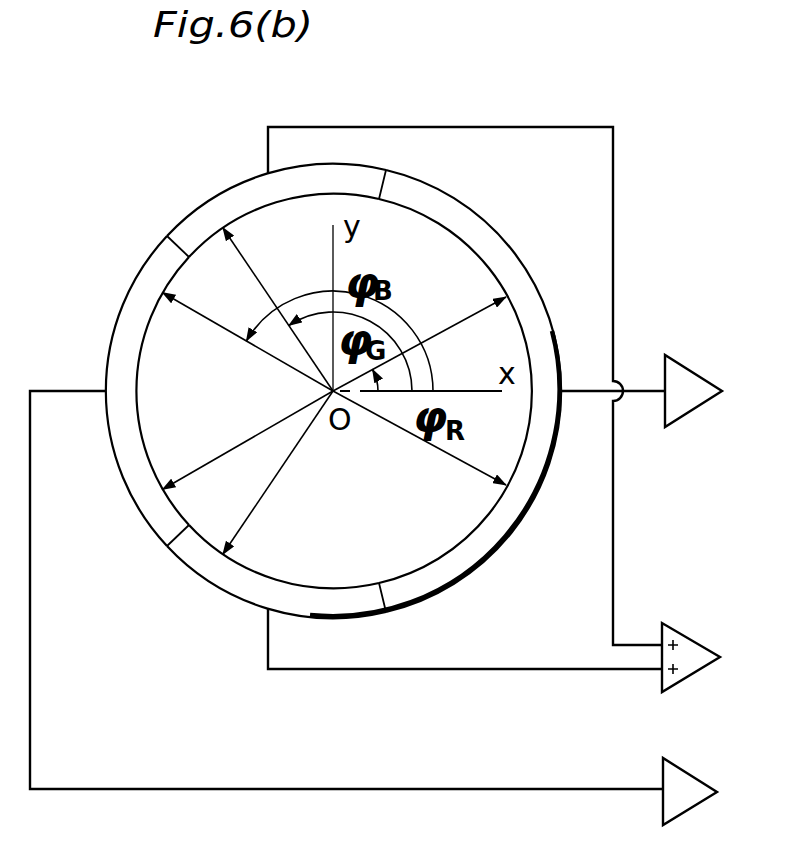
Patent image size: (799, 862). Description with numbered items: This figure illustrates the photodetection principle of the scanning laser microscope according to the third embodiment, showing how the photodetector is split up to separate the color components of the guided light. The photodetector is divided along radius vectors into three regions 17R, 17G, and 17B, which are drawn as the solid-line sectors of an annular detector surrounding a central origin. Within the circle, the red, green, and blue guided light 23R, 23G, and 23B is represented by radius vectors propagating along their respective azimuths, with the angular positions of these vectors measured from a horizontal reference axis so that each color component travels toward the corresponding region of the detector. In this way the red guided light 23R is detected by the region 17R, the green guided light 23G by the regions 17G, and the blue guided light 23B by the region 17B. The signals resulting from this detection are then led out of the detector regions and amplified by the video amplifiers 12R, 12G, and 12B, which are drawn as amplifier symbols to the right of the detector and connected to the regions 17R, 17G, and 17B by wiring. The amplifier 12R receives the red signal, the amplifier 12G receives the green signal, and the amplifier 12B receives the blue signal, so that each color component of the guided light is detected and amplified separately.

The photodetector region 17R is at (495, 236).
The photodetector region 17G is at (224, 194).
The photodetector region 17B is at (127, 303).
The red guided light 23R is at (443, 330).
The green guided light 23G is at (275, 257).
The blue guided light 23B is at (218, 325).
The video amplifier 12R is at (681, 380).
The video amplifier 12G is at (688, 650).
The video amplifier 12B is at (675, 782).